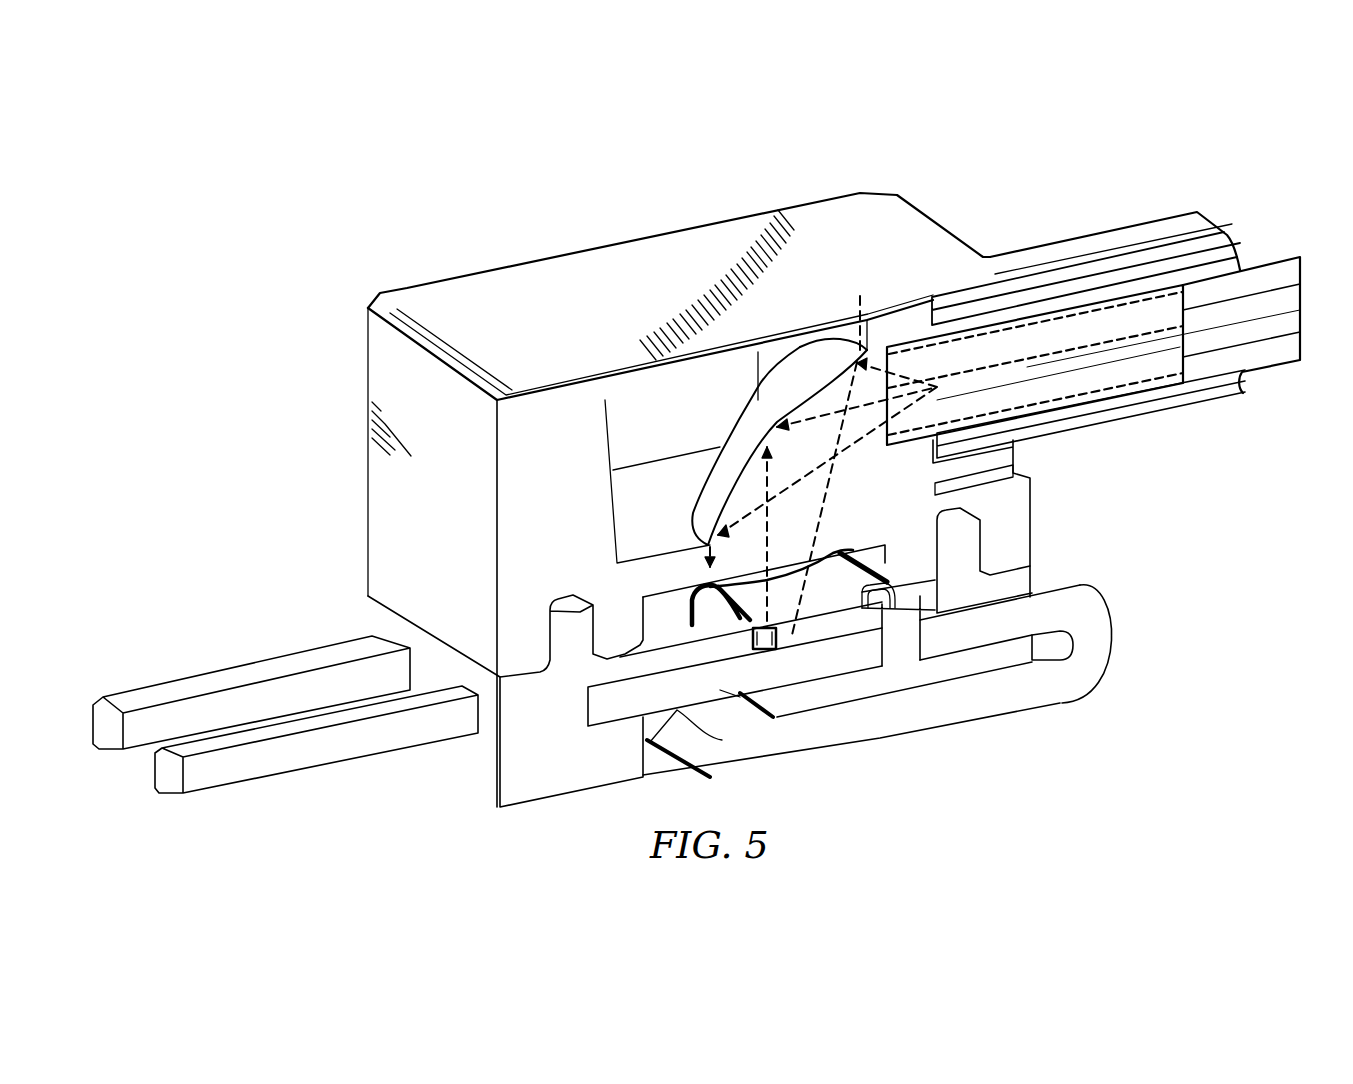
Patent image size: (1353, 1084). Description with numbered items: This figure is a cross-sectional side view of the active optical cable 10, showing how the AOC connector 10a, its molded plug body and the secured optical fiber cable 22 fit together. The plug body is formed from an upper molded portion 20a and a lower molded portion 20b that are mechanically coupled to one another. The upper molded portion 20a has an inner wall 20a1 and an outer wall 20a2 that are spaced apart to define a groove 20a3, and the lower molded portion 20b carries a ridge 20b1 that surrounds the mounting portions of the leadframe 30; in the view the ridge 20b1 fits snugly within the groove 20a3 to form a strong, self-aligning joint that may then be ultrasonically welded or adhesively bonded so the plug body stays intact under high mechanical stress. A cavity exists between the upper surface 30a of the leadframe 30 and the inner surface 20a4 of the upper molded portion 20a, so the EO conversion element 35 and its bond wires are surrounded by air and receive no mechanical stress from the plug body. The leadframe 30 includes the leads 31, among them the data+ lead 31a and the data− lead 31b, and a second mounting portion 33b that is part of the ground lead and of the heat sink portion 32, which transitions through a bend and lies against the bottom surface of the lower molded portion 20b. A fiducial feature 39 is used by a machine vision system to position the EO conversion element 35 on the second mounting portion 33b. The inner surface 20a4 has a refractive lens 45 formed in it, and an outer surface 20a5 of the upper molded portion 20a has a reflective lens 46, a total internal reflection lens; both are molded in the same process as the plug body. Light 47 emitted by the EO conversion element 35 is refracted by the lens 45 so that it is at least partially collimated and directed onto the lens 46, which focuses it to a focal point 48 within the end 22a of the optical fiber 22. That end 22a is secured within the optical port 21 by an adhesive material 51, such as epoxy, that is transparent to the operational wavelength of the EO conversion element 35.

The active optical cable 10 is at (300, 250).
The AOC connector 10a is at (900, 173).
The upper molded portion 20a is at (503, 290).
The inner wall 20a1 is at (620, 655).
The outer wall 20a2 is at (517, 668).
The groove 20a3 is at (595, 603).
The inner surface 20a4 is at (678, 595).
The outer surface 20a5 is at (653, 558).
The lower molded portion 20b is at (483, 780).
The ridge 20b1 is at (550, 627).
The optical port 21 is at (1140, 230).
The optical fiber cable 22 is at (1267, 263).
The end of the optical fiber 22a is at (927, 337).
The leadframe 30 is at (898, 614).
The upper surface of the leadframe 30a is at (697, 657).
The leads 31 is at (345, 768).
The data+ lead 31a is at (144, 698).
The data− lead 31b is at (243, 770).
The heat sink portion 32 is at (995, 703).
The second mounting portion 33b is at (673, 712).
The EO conversion element 35 is at (778, 650).
The fiducial feature 39 is at (935, 620).
The refractive lens 45 is at (850, 553).
The reflective lens 46 is at (753, 413).
The light 47 is at (770, 585).
The focal point 48 is at (937, 383).
The adhesive material 51 is at (1020, 310).